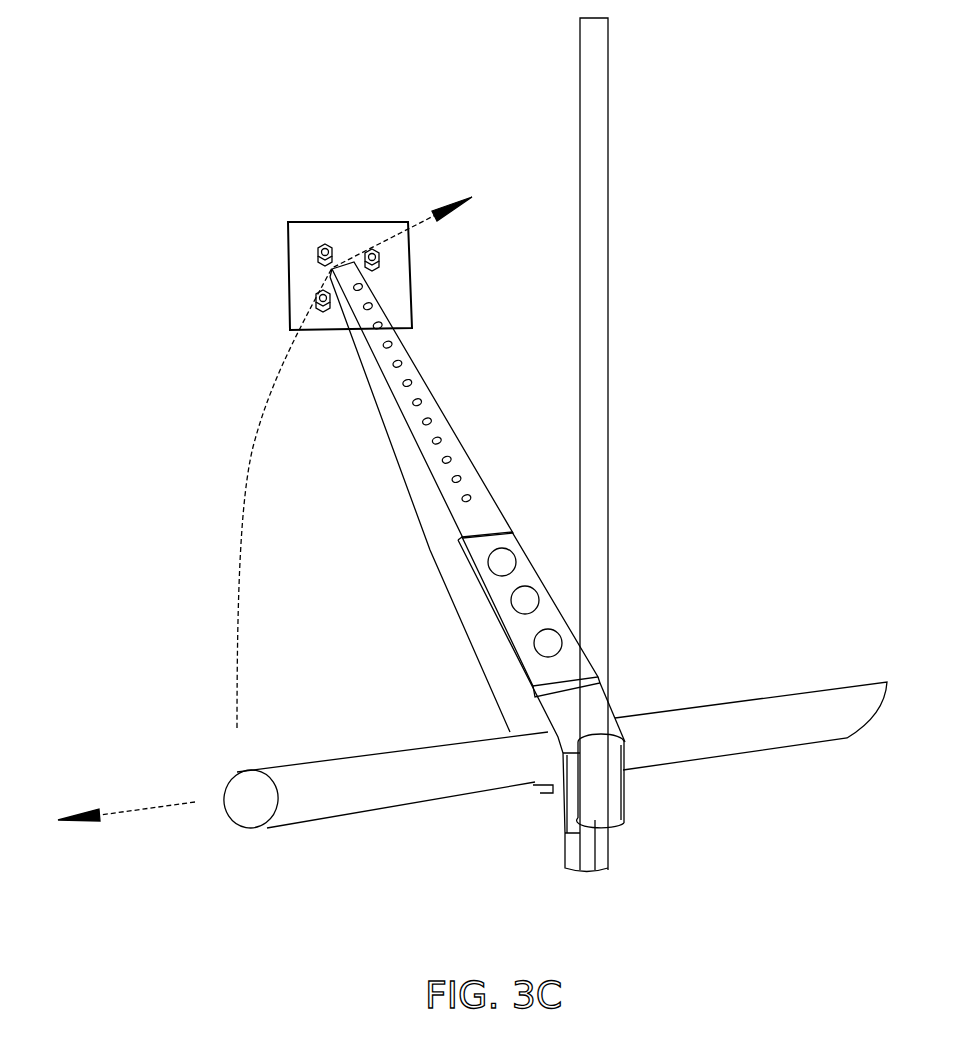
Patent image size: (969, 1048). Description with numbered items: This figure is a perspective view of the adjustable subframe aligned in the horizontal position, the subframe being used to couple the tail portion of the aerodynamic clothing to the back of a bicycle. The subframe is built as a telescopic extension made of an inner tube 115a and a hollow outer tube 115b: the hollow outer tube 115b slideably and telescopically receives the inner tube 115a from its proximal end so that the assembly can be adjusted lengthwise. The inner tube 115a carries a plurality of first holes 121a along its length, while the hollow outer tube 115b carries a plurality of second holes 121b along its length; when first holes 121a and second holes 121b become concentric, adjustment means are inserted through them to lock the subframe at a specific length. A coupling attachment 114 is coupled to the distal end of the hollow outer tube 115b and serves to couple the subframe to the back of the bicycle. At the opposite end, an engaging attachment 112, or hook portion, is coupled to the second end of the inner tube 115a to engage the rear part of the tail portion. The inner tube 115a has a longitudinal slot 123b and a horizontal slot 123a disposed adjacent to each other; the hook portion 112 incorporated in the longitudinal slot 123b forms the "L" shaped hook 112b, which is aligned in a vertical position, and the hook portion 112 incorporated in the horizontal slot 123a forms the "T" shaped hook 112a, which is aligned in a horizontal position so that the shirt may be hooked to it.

The engaging attachment 112 is at (553, 464).
The "T" shaped hook 112a is at (733, 727).
The "L" shaped hook 112b is at (608, 252).
The coupling attachment 114 is at (340, 252).
The inner tube 115a is at (470, 581).
The hollow outer tube 115b is at (414, 497).
The first holes 121a is at (520, 608).
The second holes 121b is at (430, 383).
The horizontal slot 123a is at (552, 760).
The longitudinal slot 123b is at (597, 788).